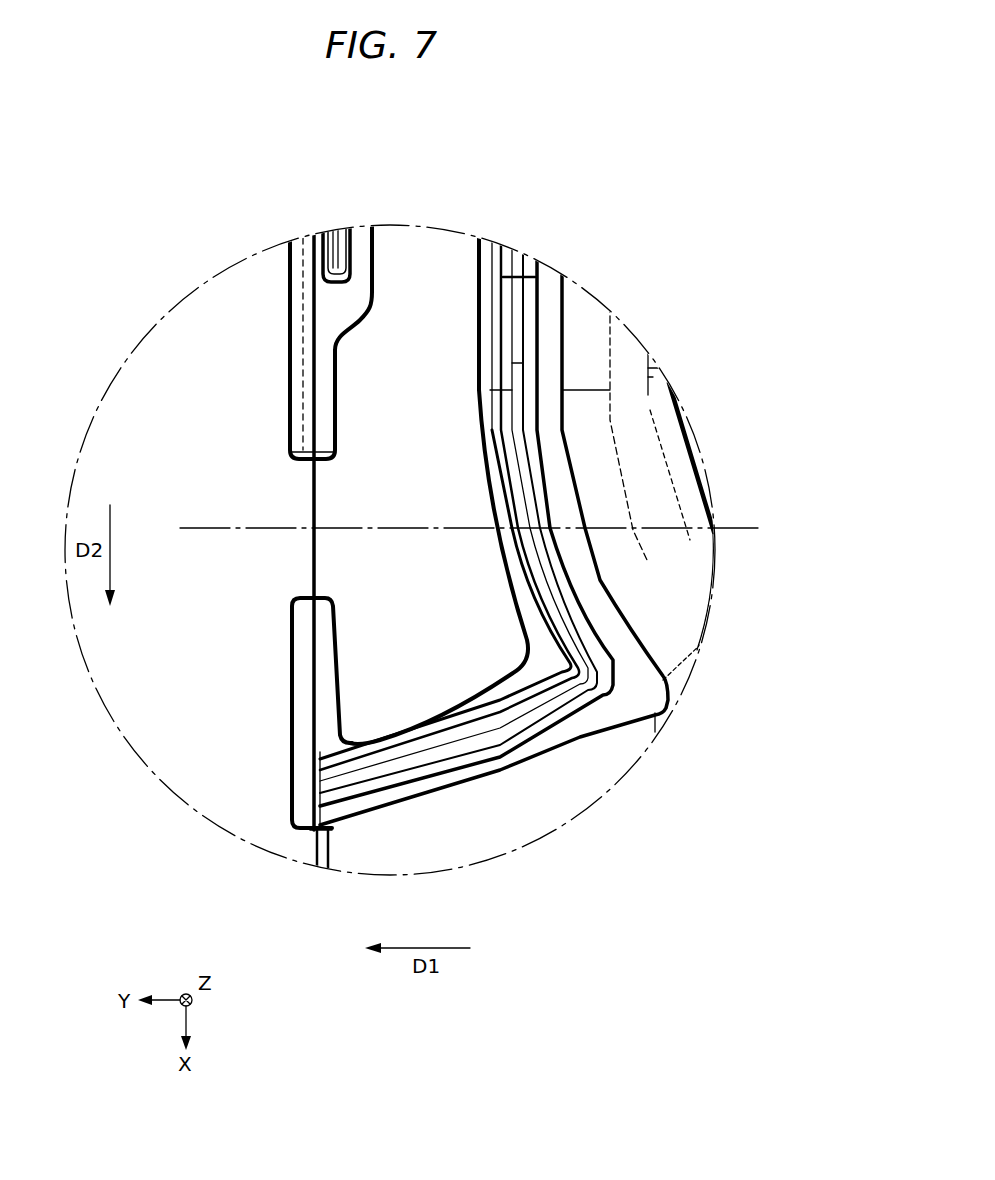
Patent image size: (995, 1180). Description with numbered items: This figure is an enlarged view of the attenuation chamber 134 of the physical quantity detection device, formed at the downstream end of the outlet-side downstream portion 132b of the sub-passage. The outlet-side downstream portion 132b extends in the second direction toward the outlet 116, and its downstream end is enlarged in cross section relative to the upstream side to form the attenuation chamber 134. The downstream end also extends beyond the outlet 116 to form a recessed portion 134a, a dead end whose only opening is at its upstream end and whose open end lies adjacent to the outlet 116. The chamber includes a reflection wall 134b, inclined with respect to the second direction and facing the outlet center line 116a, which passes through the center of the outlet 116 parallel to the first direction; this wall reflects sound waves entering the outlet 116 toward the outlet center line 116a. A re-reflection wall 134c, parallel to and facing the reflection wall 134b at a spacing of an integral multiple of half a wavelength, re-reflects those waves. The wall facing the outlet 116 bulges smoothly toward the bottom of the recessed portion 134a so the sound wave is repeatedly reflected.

The outlet 116 is at (300, 493).
The outlet center line 116a is at (195, 528).
The outlet-side downstream portion 132b is at (420, 290).
The attenuation chamber 134 is at (402, 551).
The recessed portion 134a is at (402, 660).
The reflection wall 134b is at (358, 330).
The re-reflection wall 134c is at (444, 716).